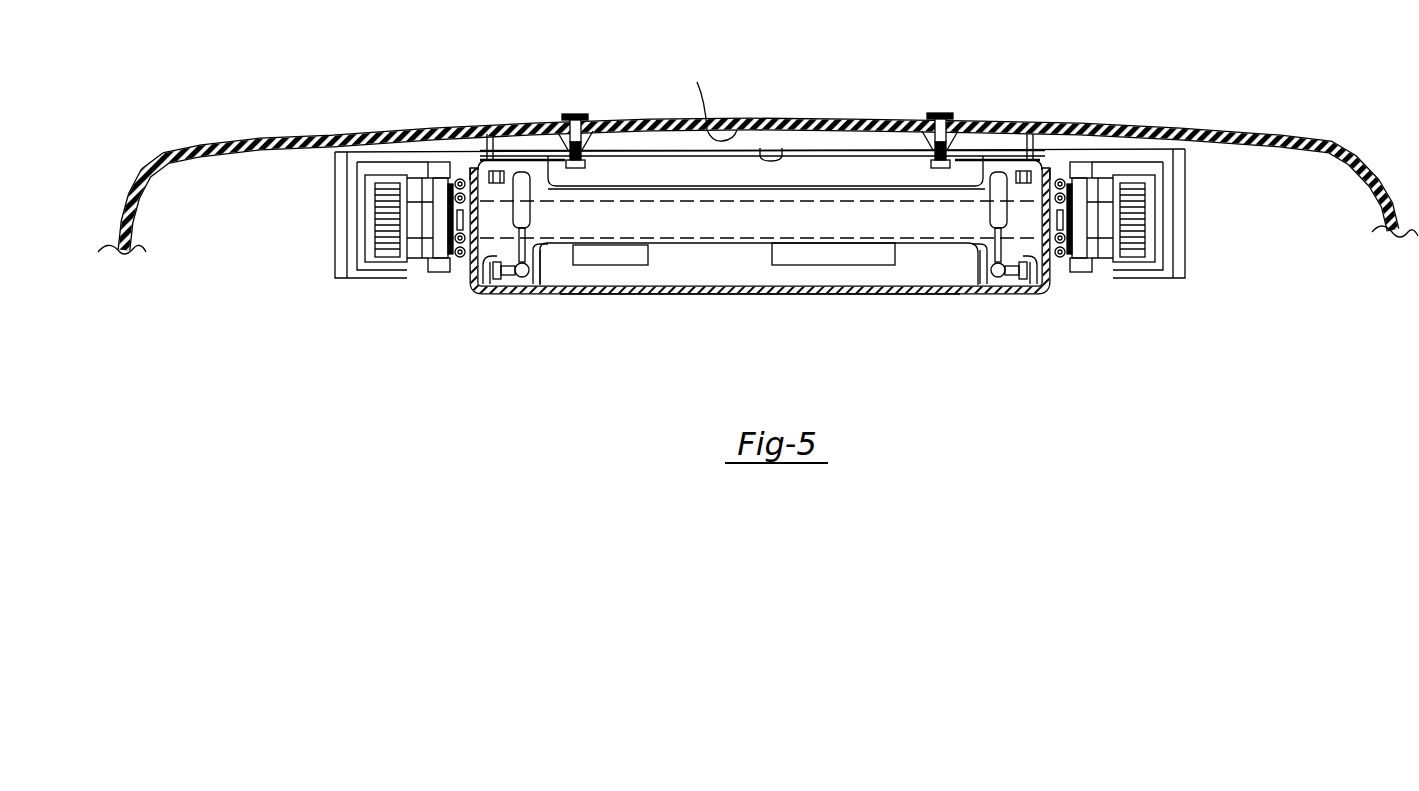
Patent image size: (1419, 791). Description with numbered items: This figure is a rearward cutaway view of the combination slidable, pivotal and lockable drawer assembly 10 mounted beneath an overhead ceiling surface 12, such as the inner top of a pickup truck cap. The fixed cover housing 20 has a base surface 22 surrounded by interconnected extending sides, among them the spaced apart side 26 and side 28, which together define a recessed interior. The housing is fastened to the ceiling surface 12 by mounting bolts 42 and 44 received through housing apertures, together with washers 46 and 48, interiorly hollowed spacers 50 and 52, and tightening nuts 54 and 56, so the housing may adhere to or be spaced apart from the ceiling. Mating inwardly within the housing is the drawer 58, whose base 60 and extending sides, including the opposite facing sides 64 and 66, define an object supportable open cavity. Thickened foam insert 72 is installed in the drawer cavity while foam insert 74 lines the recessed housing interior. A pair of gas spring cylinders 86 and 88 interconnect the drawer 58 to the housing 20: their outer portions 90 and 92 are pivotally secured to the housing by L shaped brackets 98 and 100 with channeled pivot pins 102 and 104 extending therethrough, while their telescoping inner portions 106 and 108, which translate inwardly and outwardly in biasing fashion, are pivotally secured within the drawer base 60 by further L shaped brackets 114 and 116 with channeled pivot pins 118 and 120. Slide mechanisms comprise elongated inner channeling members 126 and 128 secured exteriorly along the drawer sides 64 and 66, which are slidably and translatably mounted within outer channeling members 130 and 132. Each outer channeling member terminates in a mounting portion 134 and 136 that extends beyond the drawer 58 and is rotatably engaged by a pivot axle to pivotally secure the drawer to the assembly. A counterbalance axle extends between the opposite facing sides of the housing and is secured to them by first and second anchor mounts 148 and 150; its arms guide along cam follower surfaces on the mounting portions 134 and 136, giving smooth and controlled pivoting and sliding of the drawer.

The drawer assembly 10 is at (386, 347).
The ceiling surface 12 is at (710, 101).
The fixed cover housing 20 is at (818, 136).
The base surface 22 is at (764, 150).
The side 26 is at (335, 200).
The side 28 is at (1185, 225).
The mounting bolt 42 is at (578, 170).
The mounting bolt 44 is at (942, 170).
The washer 46 is at (550, 158).
The washer 48 is at (962, 158).
The spacer 50 is at (592, 150).
The spacer 52 is at (925, 140).
The tightening nut 54 is at (575, 114).
The tightening nut 56 is at (940, 112).
The drawer 58 is at (620, 308).
The base 60 is at (778, 295).
The side 64 is at (481, 290).
The side 66 is at (1046, 288).
The foam insert 72 is at (726, 273).
The foam insert 74 is at (652, 168).
The gas spring cylinder 86 is at (546, 216).
The gas spring cylinder 88 is at (984, 216).
The outer portion 90 is at (463, 180).
The outer portion 92 is at (1052, 176).
The L shaped bracket 98 is at (500, 160).
The L shaped bracket 100 is at (1022, 170).
The channeled pivot pin 102 is at (478, 168).
The channeled pivot pin 104 is at (1036, 170).
The inner portion 106 is at (538, 273).
The inner portion 108 is at (990, 275).
The L shaped bracket 114 is at (512, 286).
The L shaped bracket 116 is at (1003, 282).
The channeled pivot pin 118 is at (490, 288).
The channeled pivot pin 120 is at (1030, 285).
The inner channeling member 126 is at (445, 240).
The inner channeling member 128 is at (1072, 235).
The outer channeling member 130 is at (437, 283).
The outer channeling member 132 is at (1064, 261).
The mounting portion 134 is at (425, 182).
The mounting portion 136 is at (1092, 178).
The first anchor mount 148 is at (375, 220).
The second anchor mount 150 is at (1148, 205).